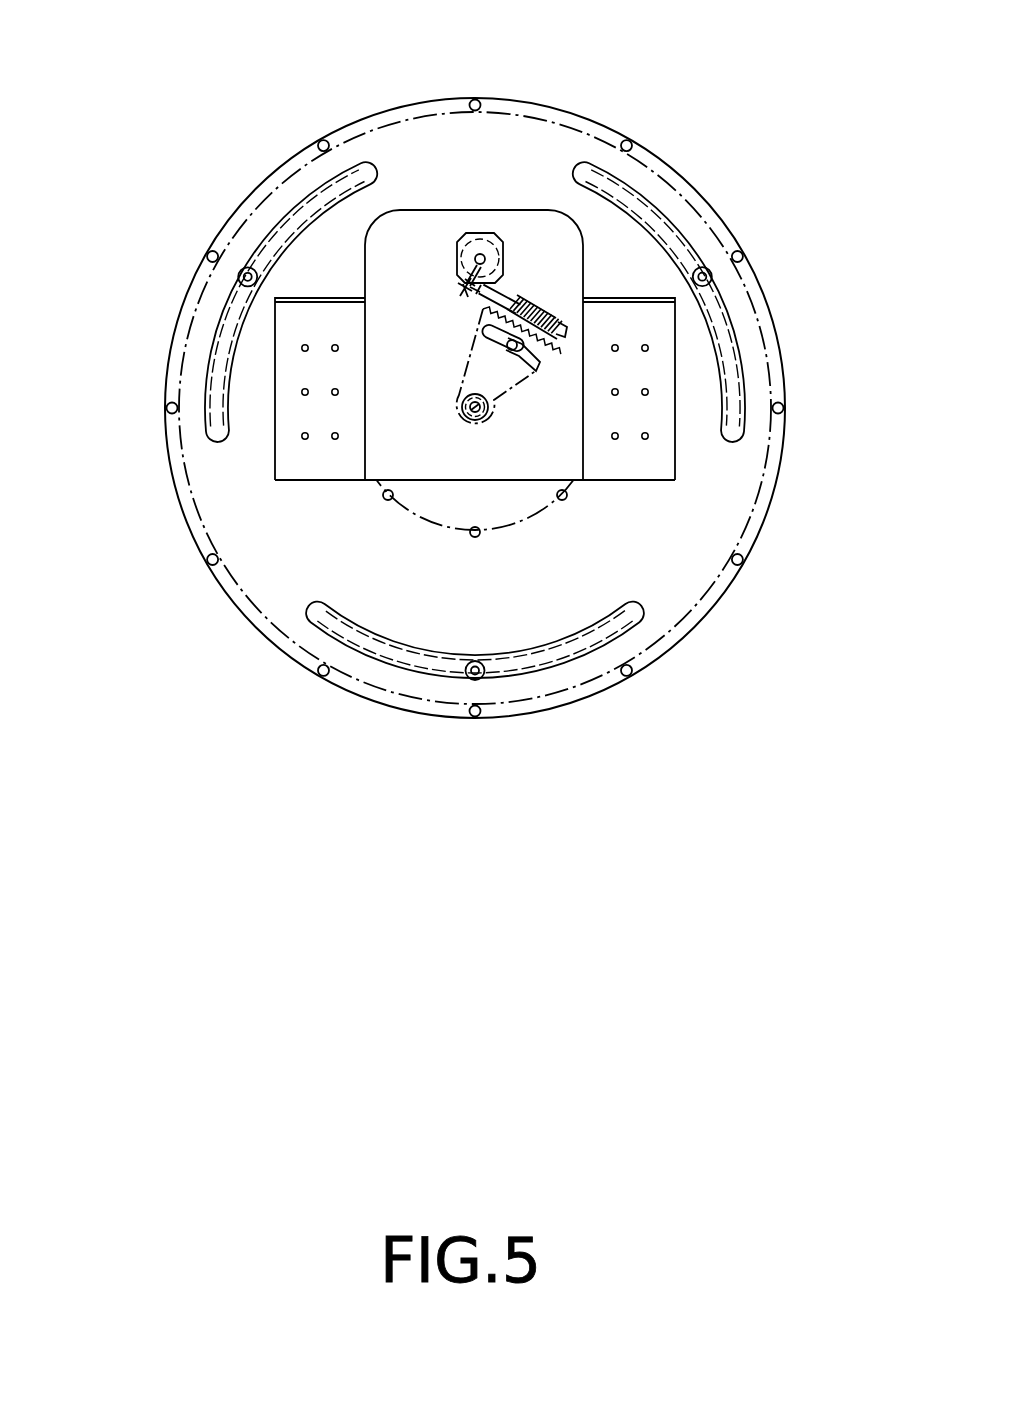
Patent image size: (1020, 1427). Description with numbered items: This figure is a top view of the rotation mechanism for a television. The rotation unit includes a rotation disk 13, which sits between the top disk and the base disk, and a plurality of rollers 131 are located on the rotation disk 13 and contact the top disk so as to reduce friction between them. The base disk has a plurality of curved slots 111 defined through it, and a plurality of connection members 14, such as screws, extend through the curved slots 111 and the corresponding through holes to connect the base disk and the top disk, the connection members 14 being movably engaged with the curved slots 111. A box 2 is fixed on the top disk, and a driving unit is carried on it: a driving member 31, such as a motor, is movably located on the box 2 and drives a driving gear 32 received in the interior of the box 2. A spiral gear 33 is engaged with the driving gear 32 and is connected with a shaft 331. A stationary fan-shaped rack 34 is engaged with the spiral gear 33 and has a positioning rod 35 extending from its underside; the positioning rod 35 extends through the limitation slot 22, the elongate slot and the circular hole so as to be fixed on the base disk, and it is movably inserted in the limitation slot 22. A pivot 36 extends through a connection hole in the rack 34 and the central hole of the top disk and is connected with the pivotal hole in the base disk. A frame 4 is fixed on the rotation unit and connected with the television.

The box 2 is at (393, 388).
The frame 4 is at (290, 448).
The rotation disk 13 is at (172, 372).
The connection members 14 is at (247, 275).
The limitation slot 22 is at (535, 377).
The driving member 31 is at (479, 255).
The driving gear 32 is at (465, 290).
The spiral gear 33 is at (548, 305).
The stationary fan-shaped rack 34 is at (502, 389).
The positioning rod 35 is at (530, 365).
The pivot 36 is at (470, 400).
The curved slots 111 is at (205, 335).
The rollers 131 is at (474, 100).
The shaft 331 is at (503, 297).